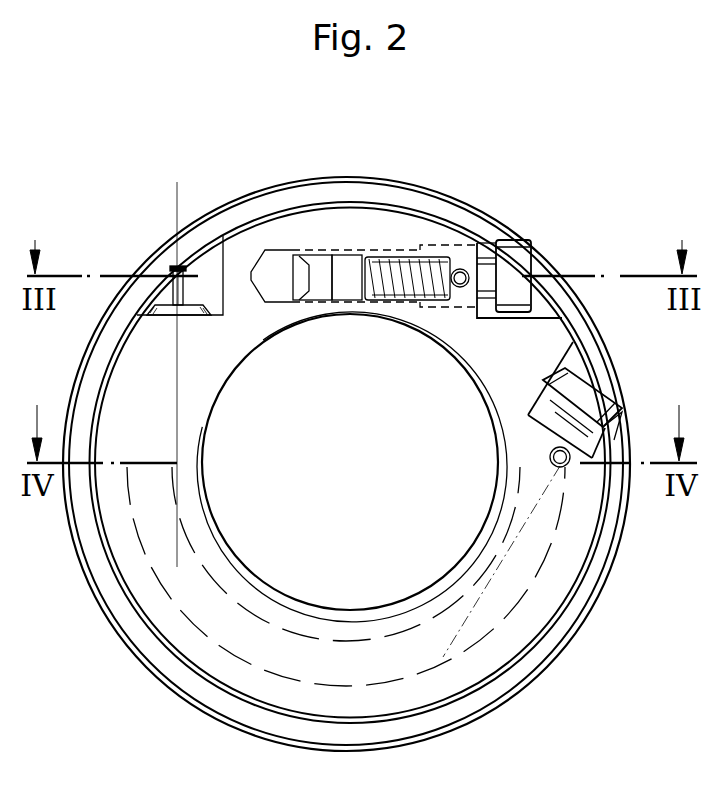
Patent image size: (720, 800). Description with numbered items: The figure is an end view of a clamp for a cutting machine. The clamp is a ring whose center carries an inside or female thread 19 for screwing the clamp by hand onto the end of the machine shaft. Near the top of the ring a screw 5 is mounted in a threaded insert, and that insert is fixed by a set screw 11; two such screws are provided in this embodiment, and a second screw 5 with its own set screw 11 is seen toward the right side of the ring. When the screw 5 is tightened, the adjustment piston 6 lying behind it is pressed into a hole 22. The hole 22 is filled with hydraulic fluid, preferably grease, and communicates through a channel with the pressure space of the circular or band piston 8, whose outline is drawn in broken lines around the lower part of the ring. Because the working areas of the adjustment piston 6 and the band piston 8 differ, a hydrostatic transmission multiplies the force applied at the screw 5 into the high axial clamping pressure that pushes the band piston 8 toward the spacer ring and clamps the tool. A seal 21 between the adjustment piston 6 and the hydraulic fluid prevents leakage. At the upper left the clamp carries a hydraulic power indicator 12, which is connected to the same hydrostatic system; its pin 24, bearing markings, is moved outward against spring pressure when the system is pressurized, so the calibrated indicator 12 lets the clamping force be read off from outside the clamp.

The screw 5 is at (521, 262).
The adjustment piston 6 is at (356, 260).
The circular or band piston 8 is at (510, 597).
The set screw 11 is at (463, 269).
The hydraulic power indicator 12 is at (163, 296).
The inside or female thread 19 is at (224, 550).
The seal 21 is at (320, 260).
The hole 22 is at (273, 252).
The pin 24 is at (177, 270).